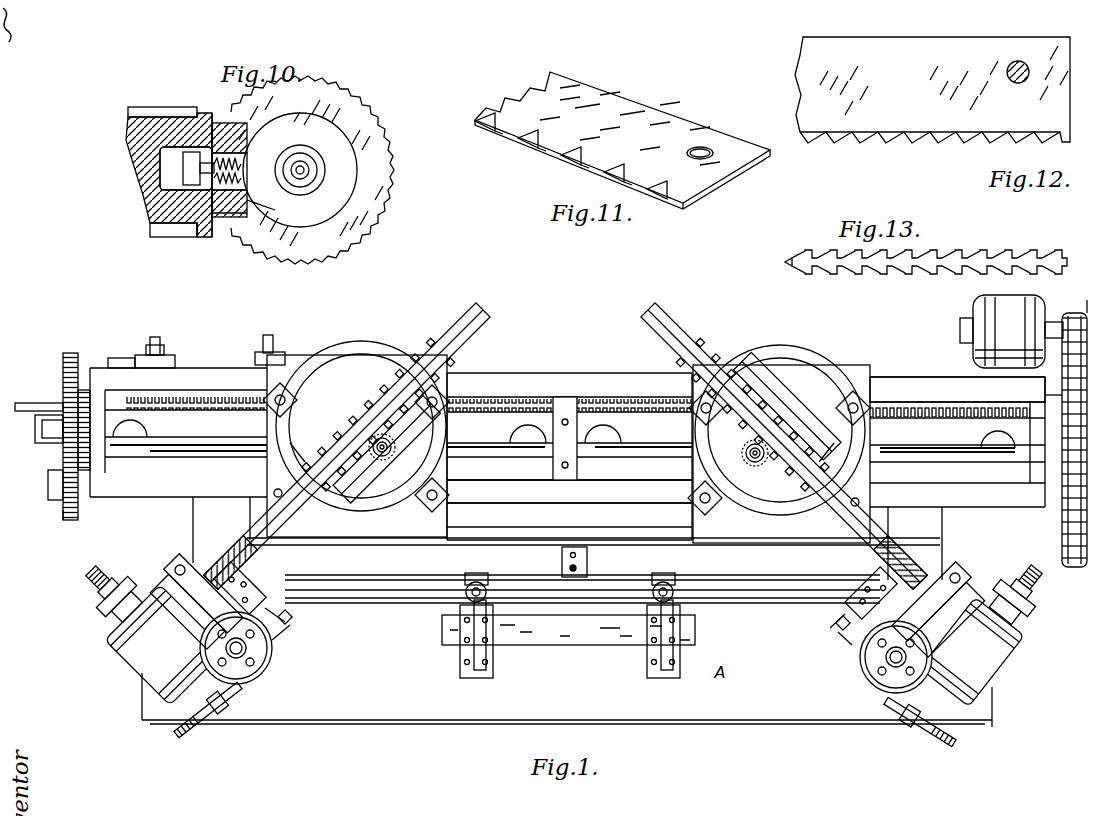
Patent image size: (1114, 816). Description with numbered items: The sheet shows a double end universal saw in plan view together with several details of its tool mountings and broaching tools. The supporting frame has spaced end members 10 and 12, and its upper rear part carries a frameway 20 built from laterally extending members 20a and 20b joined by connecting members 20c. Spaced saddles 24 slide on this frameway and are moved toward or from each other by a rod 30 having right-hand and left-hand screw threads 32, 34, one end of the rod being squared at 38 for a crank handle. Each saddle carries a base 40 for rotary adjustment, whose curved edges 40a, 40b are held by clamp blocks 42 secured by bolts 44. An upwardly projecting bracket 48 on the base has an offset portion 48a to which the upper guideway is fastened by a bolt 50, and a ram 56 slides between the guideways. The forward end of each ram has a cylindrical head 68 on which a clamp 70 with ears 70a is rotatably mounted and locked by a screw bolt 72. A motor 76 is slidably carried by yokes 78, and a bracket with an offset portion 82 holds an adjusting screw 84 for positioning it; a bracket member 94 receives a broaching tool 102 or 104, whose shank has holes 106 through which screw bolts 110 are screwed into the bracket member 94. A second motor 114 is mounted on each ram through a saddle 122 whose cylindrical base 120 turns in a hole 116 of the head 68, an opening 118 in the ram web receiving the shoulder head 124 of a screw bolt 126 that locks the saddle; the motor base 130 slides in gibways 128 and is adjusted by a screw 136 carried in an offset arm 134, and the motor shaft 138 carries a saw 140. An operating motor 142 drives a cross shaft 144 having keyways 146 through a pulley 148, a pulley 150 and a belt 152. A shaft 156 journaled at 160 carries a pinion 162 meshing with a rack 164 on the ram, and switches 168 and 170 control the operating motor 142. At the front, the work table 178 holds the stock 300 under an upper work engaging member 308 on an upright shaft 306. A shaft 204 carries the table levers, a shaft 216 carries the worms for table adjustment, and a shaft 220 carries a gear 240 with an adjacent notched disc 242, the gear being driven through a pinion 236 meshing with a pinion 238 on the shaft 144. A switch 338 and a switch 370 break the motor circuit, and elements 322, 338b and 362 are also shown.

In FIG. 1, the frame end member 10 is at (118, 697).
In FIG. 1, the frame end member 12 is at (910, 535).
In FIG. 1, the frameway 20 is at (525, 378).
In FIG. 1, the laterally extending member 20a is at (885, 380).
In FIG. 1, the laterally extending member 20b is at (493, 495).
In FIG. 1, the connecting member 20c is at (399, 447).
In FIG. 1, the saddle 24 is at (568, 449).
In FIG. 1, the rod 30 is at (590, 397).
In FIG. 1, the right-hand screw thread 32 is at (920, 406).
In FIG. 1, the left-hand screw thread 34 is at (500, 402).
In FIG. 1, the squared end 38 is at (62, 403).
In FIG. 1, the base 40 is at (570, 428).
In FIG. 1, the curved edge 40a is at (440, 424).
In FIG. 1, the curved edge 40b is at (350, 340).
In FIG. 1, the clamp block 42 is at (292, 400).
In FIG. 1, the bolt 44 is at (448, 488).
In FIG. 1, the bracket 48 is at (360, 390).
In FIG. 1, the offset portion 48a is at (790, 410).
In FIG. 1, the bolt 50 is at (483, 325).
In FIG. 10, the ram 56 is at (141, 130).
In FIG. 1, the ram 56 is at (230, 560).
In FIG. 10, the cylindrical head 68 is at (215, 237).
In FIG. 10, the clamp 70 is at (200, 237).
In FIG. 1, the clamp 70 is at (195, 612).
In FIG. 1, the ear 70a is at (950, 572).
In FIG. 1, the screw bolt 72 is at (172, 565).
In FIG. 1, the motor 76 is at (210, 655).
In FIG. 1, the yoke 78 is at (280, 640).
In FIG. 1, the offset portion 82 is at (290, 620).
In FIG. 1, the adjusting screw 84 is at (288, 612).
In FIG. 1, the bracket member 94 is at (260, 585).
In FIG. 12, the broaching tool 102 is at (932, 90).
In FIG. 13, the broaching tool 102 is at (935, 252).
In FIG. 1, the broaching tool 102 is at (300, 603).
In FIG. 11, the broaching tool 104 is at (622, 140).
In FIG. 11, the hole 106 is at (712, 148).
In FIG. 12, the hole 106 is at (1030, 72).
In FIG. 12, the screw bolt 110 is at (1018, 84).
In FIG. 1, the screw bolt 110 is at (561, 601).
In FIG. 10, the motor 114 is at (300, 170).
In FIG. 1, the motor 114 is at (112, 648).
In FIG. 10, the hole 116 is at (222, 125).
In FIG. 10, the opening 118 is at (175, 150).
In FIG. 10, the cylindrical base 120 is at (244, 180).
In FIG. 10, the saddle 122 is at (245, 217).
In FIG. 10, the shoulder head 124 is at (185, 168).
In FIG. 10, the screw bolt 126 is at (244, 166).
In FIG. 10, the gibway 128 is at (270, 208).
In FIG. 10, the base 130 is at (260, 150).
In FIG. 10, the offset arm 134 is at (274, 114).
In FIG. 10, the adjusting screw 136 is at (314, 158).
In FIG. 10, the shaft 138 is at (310, 162).
In FIG. 1, the shaft 138 is at (98, 587).
In FIG. 10, the saw 140 is at (388, 168).
In FIG. 1, the saw 140 is at (180, 735).
In FIG. 1, the operating motor 142 is at (1011, 331).
In FIG. 1, the shaft 144 is at (145, 445).
In FIG. 1, the keyway 146 is at (475, 455).
In FIG. 1, the pulley 148 is at (1088, 320).
In FIG. 1, the pulley 150 is at (1062, 538).
In FIG. 1, the belt 152 is at (1062, 385).
In FIG. 1, the shaft 156 is at (392, 448).
In FIG. 1, the journal 160 is at (372, 444).
In FIG. 1, the pinion 162 is at (392, 455).
In FIG. 1, the rack 164 is at (400, 415).
In FIG. 1, the starting switch 168 is at (562, 555).
In FIG. 1, the stopping switch 170 is at (578, 568).
In FIG. 1, the work table 178 is at (572, 688).
In FIG. 1, the shaft 204 is at (577, 470).
In FIG. 1, the shaft 216 is at (250, 540).
In FIG. 1, the shaft 220 is at (40, 435).
In FIG. 1, the pinion 236 is at (75, 515).
In FIG. 1, the pinion 238 is at (55, 498).
In FIG. 1, the gear 240 is at (72, 353).
In FIG. 1, the disc 242 is at (40, 410).
In FIG. 1, the stock 300 is at (568, 630).
In FIG. 1, the upright shaft 306 is at (680, 580).
In FIG. 1, the upper work engaging member 308 is at (485, 655).
In FIG. 1, the rods 322 is at (738, 598).
In FIG. 1, the switch 338 is at (278, 348).
In FIG. 1, the block 338b is at (272, 338).
In FIG. 1, the bolt 362 is at (158, 340).
In FIG. 1, the switch 370 is at (170, 360).